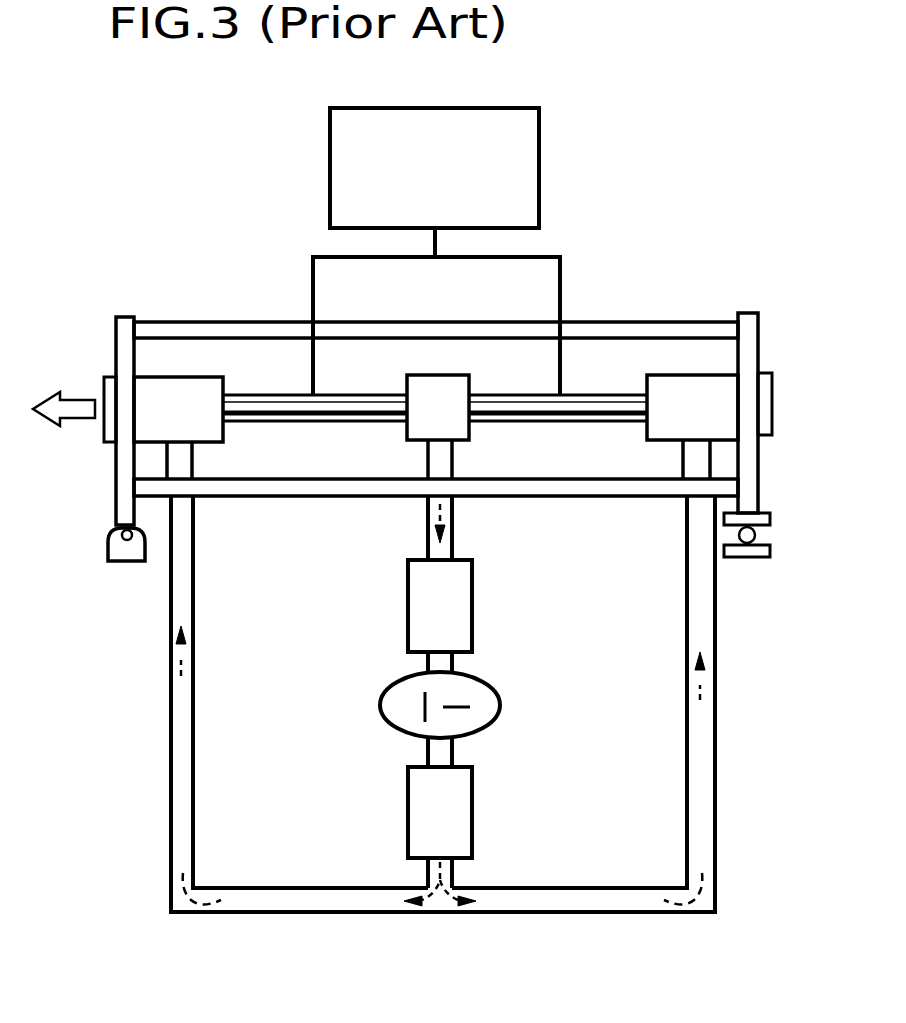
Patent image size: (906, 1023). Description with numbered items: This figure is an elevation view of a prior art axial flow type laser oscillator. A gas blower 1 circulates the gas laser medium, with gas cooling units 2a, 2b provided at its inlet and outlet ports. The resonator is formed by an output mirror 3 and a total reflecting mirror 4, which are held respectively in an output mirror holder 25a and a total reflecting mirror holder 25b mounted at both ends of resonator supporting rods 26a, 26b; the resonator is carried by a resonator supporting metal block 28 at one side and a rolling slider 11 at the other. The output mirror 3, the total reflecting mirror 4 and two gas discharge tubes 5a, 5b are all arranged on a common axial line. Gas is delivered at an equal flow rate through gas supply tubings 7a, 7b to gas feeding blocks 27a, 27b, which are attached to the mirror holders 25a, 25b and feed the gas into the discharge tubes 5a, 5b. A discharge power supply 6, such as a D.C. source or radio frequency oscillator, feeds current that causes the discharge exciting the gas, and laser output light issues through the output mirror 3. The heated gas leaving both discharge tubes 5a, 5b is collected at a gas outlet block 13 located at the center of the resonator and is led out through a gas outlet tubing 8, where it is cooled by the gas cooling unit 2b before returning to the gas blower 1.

The gas blower 1 is at (497, 692).
The gas cooling unit 2a is at (472, 800).
The gas cooling unit 2b is at (472, 600).
The output mirror 3 is at (104, 383).
The total reflecting mirror 4 is at (767, 373).
The gas discharge tube 5a is at (290, 418).
The gas discharge tube 5b is at (560, 410).
The discharge power supply 6 is at (539, 140).
The gas supply tubing 7a is at (360, 912).
The gas supply tubing 7b is at (618, 912).
The gas outlet tubing 8 is at (428, 522).
The rolling slider 11 is at (750, 558).
The gas outlet block 13 is at (469, 380).
The output mirror holder 25a is at (125, 317).
The total reflecting mirror holder 25b is at (748, 313).
The resonator supporting rod 26a is at (230, 322).
The resonator supporting rod 26b is at (275, 497).
The gas feeding block 27a is at (181, 355).
The gas feeding block 27b is at (668, 352).
The resonator supporting metal block 28 is at (120, 562).